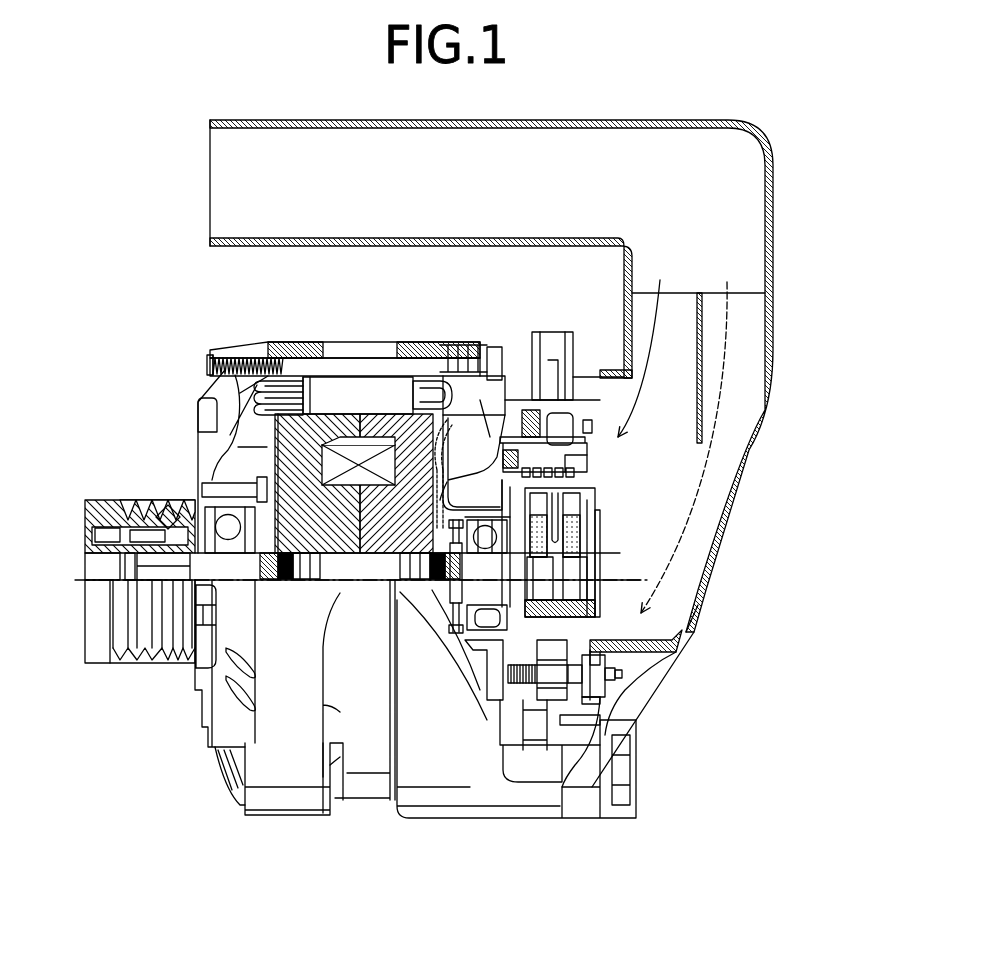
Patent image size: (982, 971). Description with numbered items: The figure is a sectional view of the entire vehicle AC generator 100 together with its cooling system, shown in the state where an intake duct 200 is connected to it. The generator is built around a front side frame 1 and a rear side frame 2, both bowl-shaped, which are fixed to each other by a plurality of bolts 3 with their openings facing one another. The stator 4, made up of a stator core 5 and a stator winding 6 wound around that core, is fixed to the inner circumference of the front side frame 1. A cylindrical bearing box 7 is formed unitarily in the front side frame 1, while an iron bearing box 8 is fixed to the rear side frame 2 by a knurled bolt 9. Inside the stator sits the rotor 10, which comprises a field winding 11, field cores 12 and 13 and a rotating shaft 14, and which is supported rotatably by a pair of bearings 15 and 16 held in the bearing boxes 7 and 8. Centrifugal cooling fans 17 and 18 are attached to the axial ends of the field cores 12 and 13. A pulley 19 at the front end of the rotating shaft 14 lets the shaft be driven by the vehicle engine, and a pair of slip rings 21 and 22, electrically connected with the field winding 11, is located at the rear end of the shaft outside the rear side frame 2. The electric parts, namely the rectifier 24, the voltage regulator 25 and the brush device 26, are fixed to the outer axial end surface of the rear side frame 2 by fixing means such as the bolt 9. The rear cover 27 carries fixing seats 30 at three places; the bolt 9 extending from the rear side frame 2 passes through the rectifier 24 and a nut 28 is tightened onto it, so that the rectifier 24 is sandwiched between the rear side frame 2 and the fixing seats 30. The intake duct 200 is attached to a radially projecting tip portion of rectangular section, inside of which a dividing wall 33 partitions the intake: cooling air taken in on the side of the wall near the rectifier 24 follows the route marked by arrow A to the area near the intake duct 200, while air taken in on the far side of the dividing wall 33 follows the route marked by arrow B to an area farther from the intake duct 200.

The front side frame 1 is at (197, 347).
The rear side frame 2 is at (495, 812).
The bolts 3 is at (323, 383).
The stator 4 is at (265, 360).
The stator core 5 is at (365, 393).
The stator winding 6 is at (260, 392).
The bearing box 7 is at (230, 473).
The bearing box 8 is at (490, 625).
The bolt 9 is at (614, 672).
The rotor 10 is at (418, 428).
The field winding 11 is at (353, 453).
The field core 12 is at (212, 402).
The field core 13 is at (477, 440).
The rotating shaft 14 is at (130, 507).
The bearing 15 is at (193, 497).
The bearing 16 is at (470, 618).
The cooling fan 17 is at (240, 447).
The cooling fan 18 is at (503, 410).
The pulley 19 is at (100, 658).
The slip ring 21 is at (540, 563).
The slip ring 22 is at (573, 585).
The rectifier 24 is at (582, 722).
The voltage regulator 25 is at (575, 390).
The brush device 26 is at (598, 515).
The rear cover 27 is at (684, 625).
The nut 28 is at (597, 657).
The fixing seats 30 is at (592, 700).
The dividing wall 33 is at (700, 350).
The AC generator 100 is at (318, 826).
The intake duct 200 is at (766, 142).
The arrow A is at (652, 392).
The arrow B is at (717, 457).